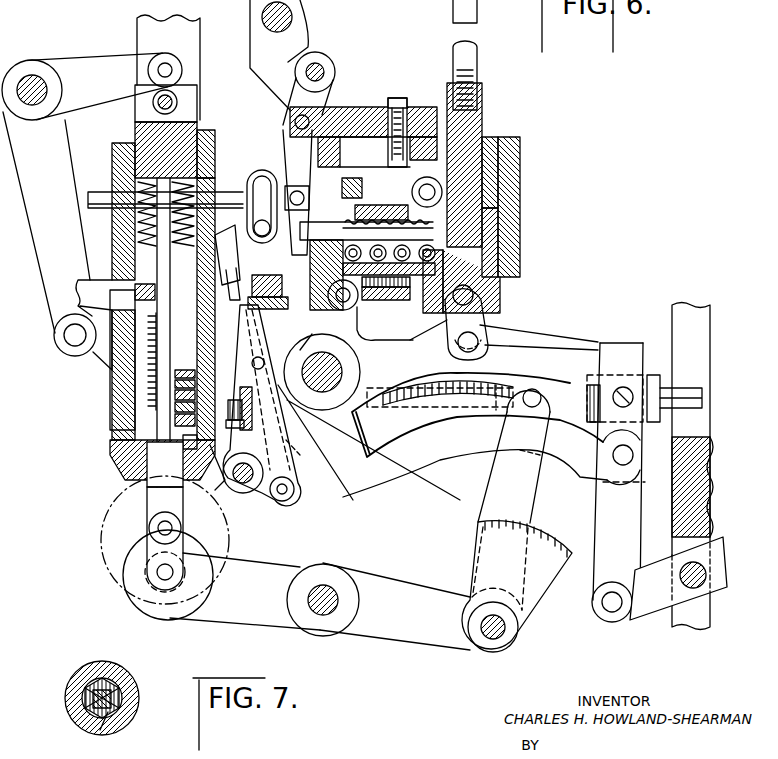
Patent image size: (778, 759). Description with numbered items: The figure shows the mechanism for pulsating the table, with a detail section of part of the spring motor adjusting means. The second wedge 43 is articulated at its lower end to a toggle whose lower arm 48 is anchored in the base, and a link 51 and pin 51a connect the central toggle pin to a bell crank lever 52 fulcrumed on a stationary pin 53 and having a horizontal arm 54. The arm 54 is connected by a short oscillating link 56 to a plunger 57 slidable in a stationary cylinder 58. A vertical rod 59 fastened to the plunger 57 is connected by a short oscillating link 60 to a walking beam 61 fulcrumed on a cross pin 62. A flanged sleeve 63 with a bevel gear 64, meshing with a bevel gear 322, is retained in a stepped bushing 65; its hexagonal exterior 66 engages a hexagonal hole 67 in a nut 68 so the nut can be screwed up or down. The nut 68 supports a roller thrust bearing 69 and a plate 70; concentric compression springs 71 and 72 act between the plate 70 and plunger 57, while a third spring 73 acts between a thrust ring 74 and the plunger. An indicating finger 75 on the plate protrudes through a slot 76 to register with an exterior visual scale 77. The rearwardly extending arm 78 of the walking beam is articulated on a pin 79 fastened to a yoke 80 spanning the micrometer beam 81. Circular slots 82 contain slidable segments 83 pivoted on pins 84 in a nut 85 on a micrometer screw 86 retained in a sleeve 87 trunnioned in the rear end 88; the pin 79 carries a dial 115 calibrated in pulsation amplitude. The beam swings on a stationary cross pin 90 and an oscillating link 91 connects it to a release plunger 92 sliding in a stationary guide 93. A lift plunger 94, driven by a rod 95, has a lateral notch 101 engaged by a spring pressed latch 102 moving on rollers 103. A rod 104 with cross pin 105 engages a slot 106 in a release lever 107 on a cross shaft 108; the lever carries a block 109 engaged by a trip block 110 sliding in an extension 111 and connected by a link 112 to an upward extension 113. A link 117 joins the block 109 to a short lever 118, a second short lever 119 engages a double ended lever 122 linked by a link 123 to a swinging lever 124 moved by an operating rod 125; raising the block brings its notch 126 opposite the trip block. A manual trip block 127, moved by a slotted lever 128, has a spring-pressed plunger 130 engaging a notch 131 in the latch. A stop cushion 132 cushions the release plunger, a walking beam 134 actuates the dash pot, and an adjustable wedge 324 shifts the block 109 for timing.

In FIG. 6, the second wedge 43 is at (198, 38).
In FIG. 6, the lower arm 48 is at (200, 522).
In FIG. 6, the link 51 is at (92, 355).
In FIG. 6, the pin 51a is at (56, 336).
In FIG. 6, the bell crank lever 52 is at (72, 178).
In FIG. 6, the stationary pin 53 is at (32, 75).
In FIG. 6, the arm 54 is at (90, 62).
In FIG. 6, the short oscillating link 56 is at (185, 92).
In FIG. 6, the plunger 57 is at (197, 125).
In FIG. 6, the stationary cylinder 58 is at (217, 135).
In FIG. 6, the vertical rod 59 is at (150, 298).
In FIG. 7, the vertical rod 59 is at (90, 725).
In FIG. 6, the short oscillating link 60 is at (160, 555).
In FIG. 6, the walking beam 61 is at (252, 622).
In FIG. 6, the cross pin or shaft 62 is at (322, 615).
In FIG. 6, the flanged sleeve 63 is at (192, 442).
In FIG. 7, the flanged sleeve 63 is at (130, 684).
In FIG. 6, the bevel gear 64 is at (222, 482).
In FIG. 6, the stepped bushing 65 is at (125, 462).
In FIG. 7, the hexagonal exterior 66 is at (120, 700).
In FIG. 7, the hexagonal hole 67 is at (112, 722).
In FIG. 6, the nut 68 is at (236, 428).
In FIG. 7, the nut 68 is at (125, 710).
In FIG. 6, the roller thrust bearing 69 is at (172, 422).
In FIG. 6, the plate 70 is at (172, 410).
In FIG. 6, the compression spring 71 is at (210, 196).
In FIG. 6, the compression spring 72 is at (195, 232).
In FIG. 6, the third spring 73 is at (135, 240).
In FIG. 6, the thrust ring 74 is at (150, 350).
In FIG. 6, the indicating finger 75 is at (172, 397).
In FIG. 6, the slot 76 is at (158, 378).
In FIG. 6, the exterior visual scale 77 is at (158, 388).
In FIG. 6, the rearwardly extending arm 78 is at (425, 640).
In FIG. 6, the pin 79 is at (498, 640).
In FIG. 6, the yoke 80 is at (537, 508).
In FIG. 6, the micrometer beam 81 is at (577, 463).
In FIG. 6, the circular slots 82 is at (423, 425).
In FIG. 6, the slidable segments 83 is at (503, 413).
In FIG. 6, the pins 84 is at (535, 392).
In FIG. 6, the nut 85 is at (592, 408).
In FIG. 6, the micrometer screw 86 is at (405, 410).
In FIG. 6, the sleeve 87 is at (650, 375).
In FIG. 6, the rear end 88 is at (617, 345).
In FIG. 6, the stationary cross pin 90 is at (342, 368).
In FIG. 6, the oscillating link 91 is at (480, 314).
In FIG. 6, the release plunger 92 is at (502, 287).
In FIG. 6, the stationary guide 93 is at (521, 206).
In FIG. 6, the lift plunger 94 is at (483, 125).
In FIG. 6, the rod 95 is at (478, 58).
In FIG. 6, the lateral notch 101 is at (521, 178).
In FIG. 6, the spring pressed latch 102 is at (440, 185).
In FIG. 6, the rollers 103 is at (432, 310).
In FIG. 6, the rod 104 is at (323, 220).
In FIG. 6, the cross pin 105 is at (360, 229).
In FIG. 6, the slot 106 is at (258, 170).
In FIG. 6, the release lever 107 is at (232, 262).
In FIG. 6, the cross shaft 108 is at (246, 492).
In FIG. 6, the block 109 is at (268, 289).
In FIG. 6, the trip block 110 is at (352, 318).
In FIG. 6, the extension 111 is at (313, 340).
In FIG. 6, the link 112 is at (375, 300).
In FIG. 6, the upward extension 113 is at (385, 323).
In FIG. 6, the dial 115 is at (548, 580).
In FIG. 6, the link 117 is at (278, 462).
In FIG. 6, the short lever 118 is at (285, 500).
In FIG. 6, the second short lever 119 is at (301, 453).
In FIG. 6, the double ended lever 122 is at (265, 366).
In FIG. 6, the link 123 is at (228, 277).
In FIG. 6, the swinging lever 124 is at (330, 100).
In FIG. 6, the operating rod 125 is at (240, 192).
In FIG. 6, the notch 126 is at (246, 381).
In FIG. 6, the manual trip block 127 is at (402, 100).
In FIG. 6, the slotted lever 128 is at (305, 30).
In FIG. 6, the spring-pressed plunger 130 is at (377, 152).
In FIG. 6, the notch 131 is at (396, 205).
In FIG. 6, the stop cushion 132 is at (395, 300).
In FIG. 6, the walking beam 134 is at (653, 605).
In FIG. 6, the bevel gear 322 is at (102, 545).
In FIG. 6, the adjustable wedge 324 is at (295, 402).